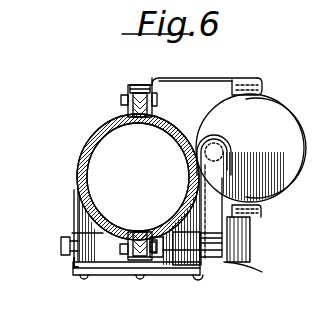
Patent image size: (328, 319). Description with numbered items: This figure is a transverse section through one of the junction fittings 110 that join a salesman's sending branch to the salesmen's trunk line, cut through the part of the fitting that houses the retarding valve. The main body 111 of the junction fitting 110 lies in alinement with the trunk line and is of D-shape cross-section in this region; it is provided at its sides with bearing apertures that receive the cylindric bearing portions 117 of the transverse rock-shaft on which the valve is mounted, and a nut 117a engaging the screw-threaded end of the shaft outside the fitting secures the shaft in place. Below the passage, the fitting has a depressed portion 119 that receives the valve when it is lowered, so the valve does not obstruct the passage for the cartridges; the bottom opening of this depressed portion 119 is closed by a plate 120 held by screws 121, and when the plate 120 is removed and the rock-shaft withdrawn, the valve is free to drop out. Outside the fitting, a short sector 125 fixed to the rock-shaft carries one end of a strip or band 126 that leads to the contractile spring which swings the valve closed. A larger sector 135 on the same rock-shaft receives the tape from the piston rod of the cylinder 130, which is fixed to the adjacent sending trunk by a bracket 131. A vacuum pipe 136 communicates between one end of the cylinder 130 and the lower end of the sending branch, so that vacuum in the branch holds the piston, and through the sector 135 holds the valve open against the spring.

The junction fitting 110 is at (113, 113).
The main body 111 is at (85, 147).
The bracket 131 is at (207, 93).
The cylinder 130 is at (268, 117).
The vacuum pipe 136 is at (211, 162).
The larger sector 135 is at (251, 232).
The strip or band 126 is at (252, 268).
The short sector 125 is at (228, 262).
The depressed portion 119 is at (76, 268).
The plate 120 is at (117, 276).
The screws 121 is at (197, 279).
The cylindric bearing portions 117 is at (60, 246).
The nut 117a is at (77, 265).